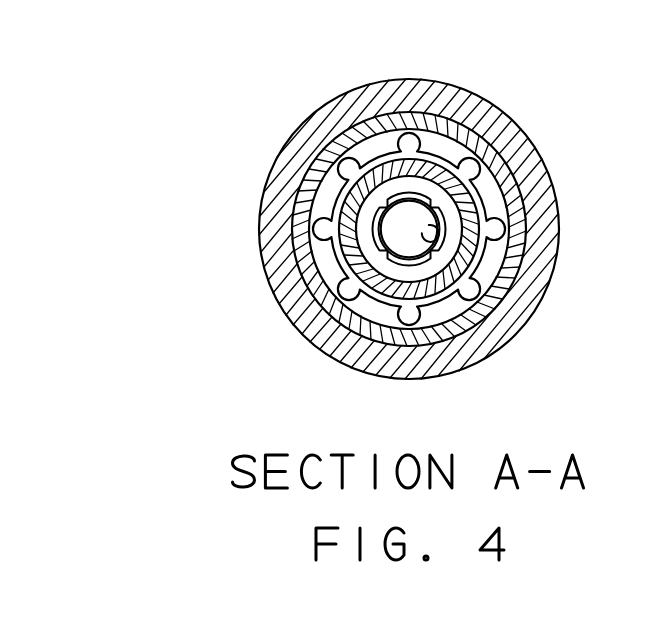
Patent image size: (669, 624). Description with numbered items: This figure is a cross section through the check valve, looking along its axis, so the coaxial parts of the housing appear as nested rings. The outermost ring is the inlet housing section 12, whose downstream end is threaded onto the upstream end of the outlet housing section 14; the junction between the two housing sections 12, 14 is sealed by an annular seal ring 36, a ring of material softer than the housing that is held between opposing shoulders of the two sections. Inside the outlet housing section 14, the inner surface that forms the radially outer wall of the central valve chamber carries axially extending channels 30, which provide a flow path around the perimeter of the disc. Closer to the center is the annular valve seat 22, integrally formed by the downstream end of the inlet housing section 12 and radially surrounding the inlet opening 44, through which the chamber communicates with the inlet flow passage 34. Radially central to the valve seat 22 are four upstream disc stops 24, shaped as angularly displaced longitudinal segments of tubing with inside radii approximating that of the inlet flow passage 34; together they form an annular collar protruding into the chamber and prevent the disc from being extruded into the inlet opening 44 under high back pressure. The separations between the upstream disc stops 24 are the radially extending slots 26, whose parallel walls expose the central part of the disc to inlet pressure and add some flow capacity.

The inlet housing section 12 is at (520, 318).
The outlet housing section 14 is at (455, 305).
The annular valve seat 22 is at (393, 167).
The upstream disc stops 24 is at (433, 197).
The radially extending slots 26 is at (380, 229).
The axially extending channels 30 is at (500, 143).
The inlet flow passage 34 is at (400, 222).
The annular seal ring 36 is at (511, 267).
The inlet opening 44 is at (422, 229).